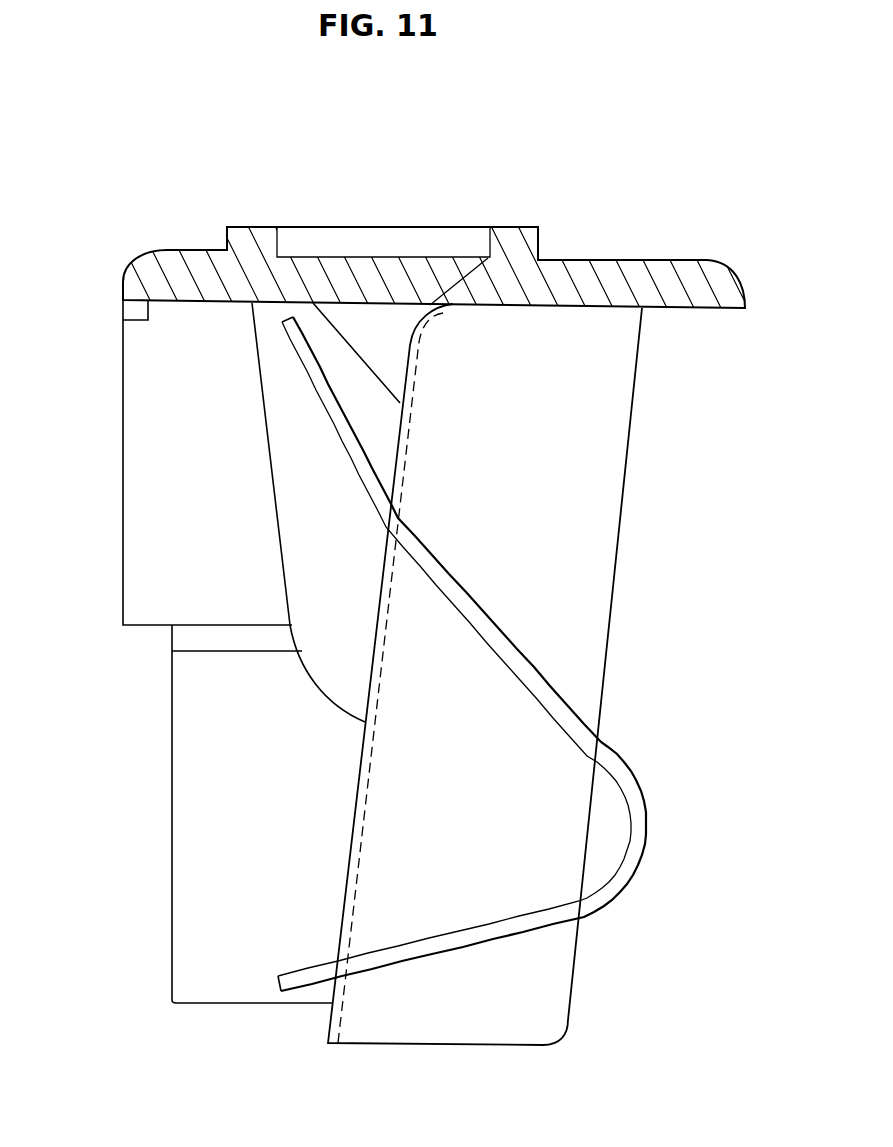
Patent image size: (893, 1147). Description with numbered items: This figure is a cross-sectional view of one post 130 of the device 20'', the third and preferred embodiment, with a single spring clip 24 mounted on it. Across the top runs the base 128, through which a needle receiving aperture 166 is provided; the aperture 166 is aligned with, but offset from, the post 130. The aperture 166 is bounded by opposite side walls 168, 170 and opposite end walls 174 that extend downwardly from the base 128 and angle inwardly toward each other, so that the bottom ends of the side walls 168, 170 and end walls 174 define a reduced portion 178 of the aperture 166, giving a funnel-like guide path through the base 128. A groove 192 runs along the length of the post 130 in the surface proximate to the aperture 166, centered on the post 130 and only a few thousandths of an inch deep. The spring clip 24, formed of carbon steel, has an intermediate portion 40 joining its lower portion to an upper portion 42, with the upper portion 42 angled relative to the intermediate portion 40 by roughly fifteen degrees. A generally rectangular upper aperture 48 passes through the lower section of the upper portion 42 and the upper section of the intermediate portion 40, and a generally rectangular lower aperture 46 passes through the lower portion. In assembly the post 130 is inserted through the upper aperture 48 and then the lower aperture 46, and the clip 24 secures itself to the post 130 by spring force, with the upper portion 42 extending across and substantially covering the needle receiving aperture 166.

The device 20'' is at (479, 672).
The spring clip 24 is at (628, 787).
The intermediate portion 40 is at (536, 672).
The upper portion 42 is at (320, 400).
The lower aperture 46 is at (590, 903).
The upper aperture 48 is at (592, 767).
The base 128 is at (662, 278).
The post 130 is at (607, 508).
The needle receiving aperture 166 is at (478, 300).
The side wall 168 is at (462, 300).
The side wall 170 is at (298, 285).
The end wall 174 is at (377, 268).
The reduced portion 178 is at (430, 256).
The groove 192 is at (367, 785).